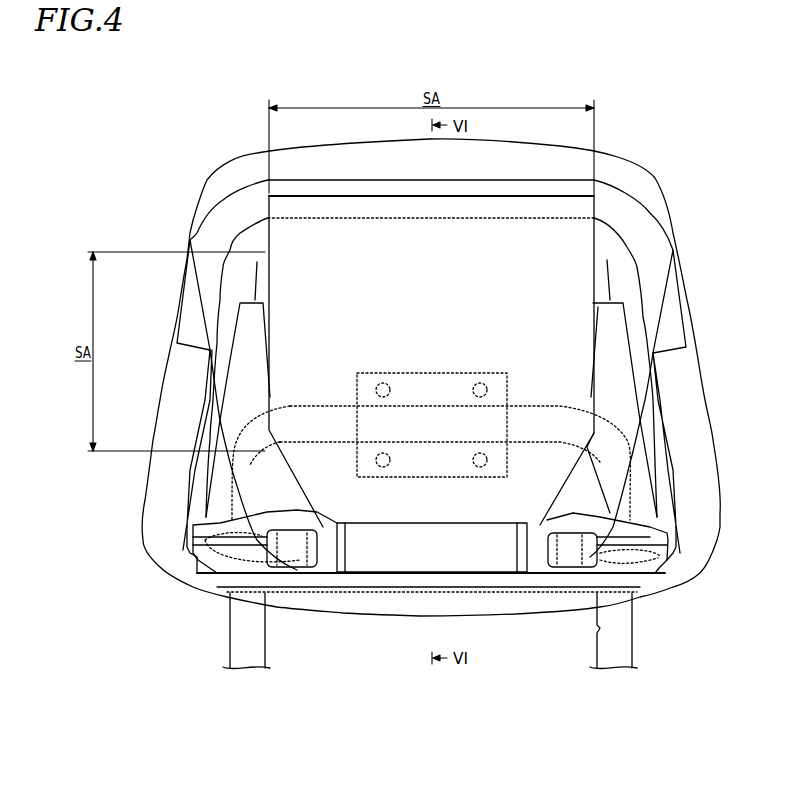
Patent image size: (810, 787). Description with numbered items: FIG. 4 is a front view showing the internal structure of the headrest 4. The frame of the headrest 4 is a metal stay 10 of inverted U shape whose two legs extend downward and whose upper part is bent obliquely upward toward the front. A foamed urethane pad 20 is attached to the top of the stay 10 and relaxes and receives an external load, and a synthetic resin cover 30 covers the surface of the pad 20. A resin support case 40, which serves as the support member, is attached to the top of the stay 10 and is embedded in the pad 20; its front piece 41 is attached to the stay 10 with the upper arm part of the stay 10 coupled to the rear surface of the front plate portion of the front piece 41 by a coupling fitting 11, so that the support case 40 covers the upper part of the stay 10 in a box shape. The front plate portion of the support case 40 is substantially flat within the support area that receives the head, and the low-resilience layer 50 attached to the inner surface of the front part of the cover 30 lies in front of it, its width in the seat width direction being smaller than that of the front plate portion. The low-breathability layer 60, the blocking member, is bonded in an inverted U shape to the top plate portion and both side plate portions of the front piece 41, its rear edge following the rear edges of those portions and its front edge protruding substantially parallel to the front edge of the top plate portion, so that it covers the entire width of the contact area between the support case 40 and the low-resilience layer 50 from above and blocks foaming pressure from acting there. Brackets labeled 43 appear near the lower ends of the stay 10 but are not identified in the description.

The headrest 4 is at (694, 176).
The stay 10 is at (625, 628).
The coupling fitting 11 is at (447, 395).
The pad 20 is at (627, 177).
The cover 30 is at (609, 152).
The support case 40 is at (238, 280).
The front piece 41 is at (262, 289).
The lower bracket 43 is at (283, 593).
The low-resilience layer 50 is at (357, 254).
The low-breathability layer 60 is at (303, 192).